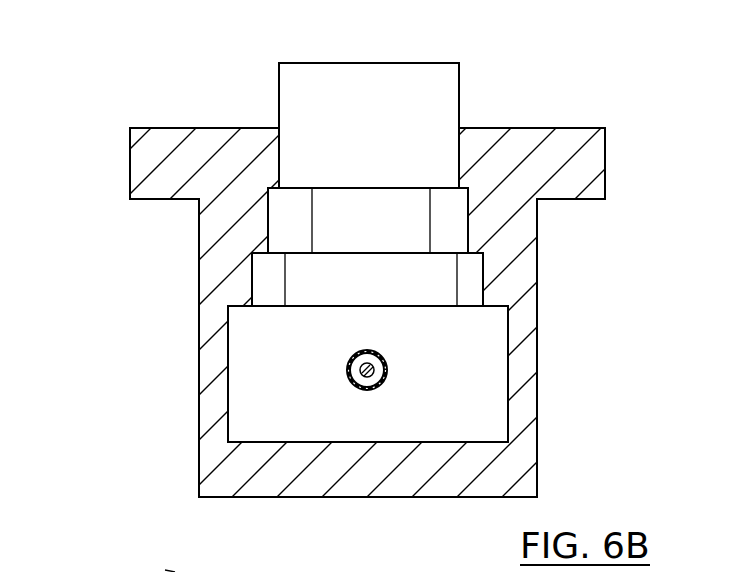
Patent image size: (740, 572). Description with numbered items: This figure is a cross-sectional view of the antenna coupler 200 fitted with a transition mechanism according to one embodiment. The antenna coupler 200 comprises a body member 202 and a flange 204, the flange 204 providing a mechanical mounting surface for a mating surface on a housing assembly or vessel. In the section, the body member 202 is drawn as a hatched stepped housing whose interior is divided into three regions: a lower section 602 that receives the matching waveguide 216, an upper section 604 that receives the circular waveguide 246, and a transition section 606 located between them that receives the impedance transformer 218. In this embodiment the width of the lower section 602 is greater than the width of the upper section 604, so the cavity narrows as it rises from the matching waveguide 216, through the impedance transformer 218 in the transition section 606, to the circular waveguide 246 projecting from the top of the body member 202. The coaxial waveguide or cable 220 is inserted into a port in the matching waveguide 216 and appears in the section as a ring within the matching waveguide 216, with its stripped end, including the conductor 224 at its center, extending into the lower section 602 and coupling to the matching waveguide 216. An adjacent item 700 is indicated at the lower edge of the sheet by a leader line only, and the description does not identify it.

The antenna coupler 200 is at (370, 286).
The body member 202 is at (538, 324).
The flange 204 is at (130, 160).
The matching waveguide 216 is at (238, 421).
The impedance transformer 218 is at (470, 446).
The coaxial waveguide or cable 220 is at (358, 386).
The conductor 224 is at (380, 362).
The circular waveguide 246 is at (325, 68).
The lower section 602 is at (227, 357).
The upper section 604 is at (275, 147).
The transition section 606 is at (251, 282).
The adjacent component 700 is at (172, 571).